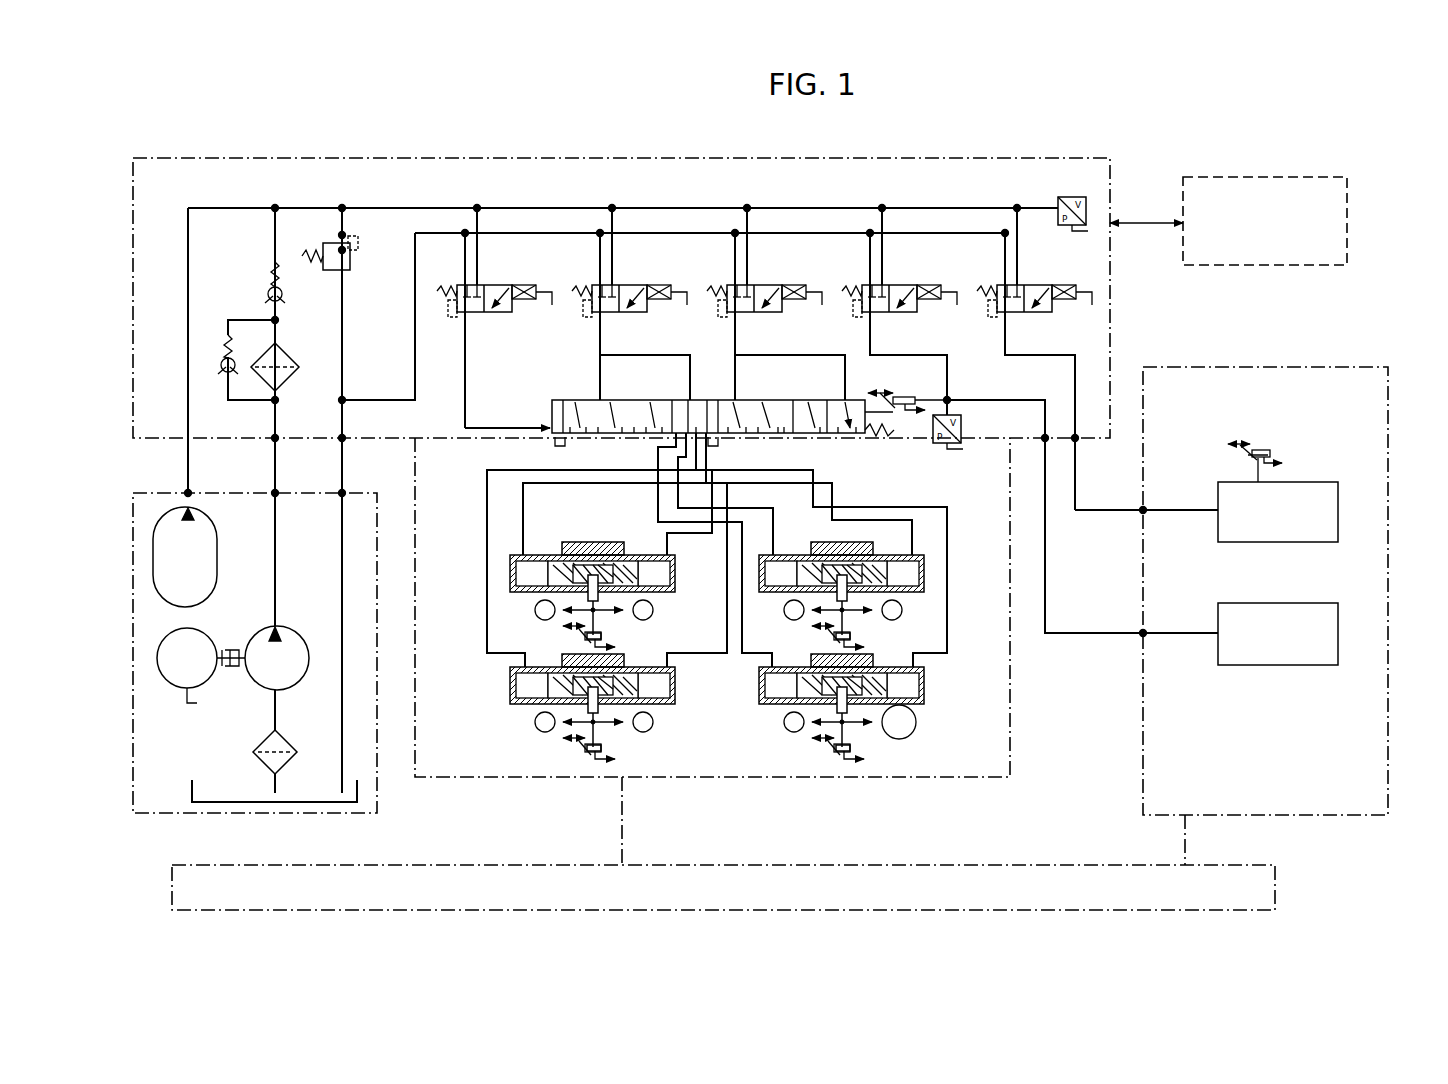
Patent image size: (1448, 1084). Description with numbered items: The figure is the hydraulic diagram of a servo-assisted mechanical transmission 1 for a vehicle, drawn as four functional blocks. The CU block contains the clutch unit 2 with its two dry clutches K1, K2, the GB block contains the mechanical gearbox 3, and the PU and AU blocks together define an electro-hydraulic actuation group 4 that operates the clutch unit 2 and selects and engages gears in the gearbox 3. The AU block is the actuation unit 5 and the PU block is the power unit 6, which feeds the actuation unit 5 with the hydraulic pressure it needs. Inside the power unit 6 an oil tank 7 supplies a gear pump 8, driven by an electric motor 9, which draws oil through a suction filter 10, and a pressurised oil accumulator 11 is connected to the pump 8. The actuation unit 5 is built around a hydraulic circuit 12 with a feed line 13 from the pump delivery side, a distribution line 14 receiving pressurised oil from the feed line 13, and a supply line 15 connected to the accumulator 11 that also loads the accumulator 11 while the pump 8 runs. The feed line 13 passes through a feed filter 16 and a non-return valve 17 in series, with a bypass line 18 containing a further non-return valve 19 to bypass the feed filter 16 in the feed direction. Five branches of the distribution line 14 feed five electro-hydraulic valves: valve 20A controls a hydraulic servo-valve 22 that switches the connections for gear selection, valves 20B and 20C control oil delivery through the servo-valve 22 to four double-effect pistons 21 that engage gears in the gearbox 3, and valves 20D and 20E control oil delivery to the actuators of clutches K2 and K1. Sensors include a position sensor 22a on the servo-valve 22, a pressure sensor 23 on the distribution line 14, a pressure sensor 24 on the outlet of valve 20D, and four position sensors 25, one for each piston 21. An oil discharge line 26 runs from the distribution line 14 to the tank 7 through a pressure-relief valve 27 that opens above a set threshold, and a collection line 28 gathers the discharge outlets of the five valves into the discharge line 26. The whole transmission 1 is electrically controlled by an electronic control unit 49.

The servo-assisted mechanical transmission 1 is at (1050, 128).
The clutch unit 2 is at (1336, 393).
The mechanical gearbox 3 is at (800, 890).
The electro-hydraulic actuation group 4 is at (420, 790).
The actuation unit 5 is at (398, 182).
The power unit 6 is at (162, 732).
The tank 7 is at (258, 805).
The gear pump 8 is at (290, 648).
The electric motor 9 is at (157, 658).
The suction filter 10 is at (268, 742).
The pressurised oil accumulator 11 is at (165, 562).
The hydraulic circuit 12 is at (645, 206).
The feed line 13 is at (275, 468).
The distribution line 14 is at (550, 207).
The supply line 15 is at (188, 253).
The feed filter 16 is at (283, 362).
The non-return valve 17 is at (268, 288).
The bypass line 18 is at (228, 385).
The non-return valve 19 is at (221, 362).
The electro-hydraulic valve 20A is at (520, 313).
The electro-hydraulic valve 20B is at (648, 290).
The electro-hydraulic valve 20C is at (783, 290).
The electro-hydraulic valve 20D is at (947, 262).
The electro-hydraulic valve 20E is at (1048, 290).
The double-effect piston 21 is at (520, 593).
The hydraulic servo-valve 22 is at (549, 410).
The position sensor 22a is at (918, 398).
The pressure sensor 23 is at (1090, 210).
The pressure sensor 24 is at (945, 445).
The position sensor 25 is at (604, 636).
The oil discharge line 26 is at (342, 460).
The pressure-relief valve 27 is at (348, 280).
The collection line 28 is at (415, 372).
The electronic control unit 49 is at (1312, 188).
The dry clutch K1 is at (1333, 500).
The dry clutch K2 is at (1335, 618).